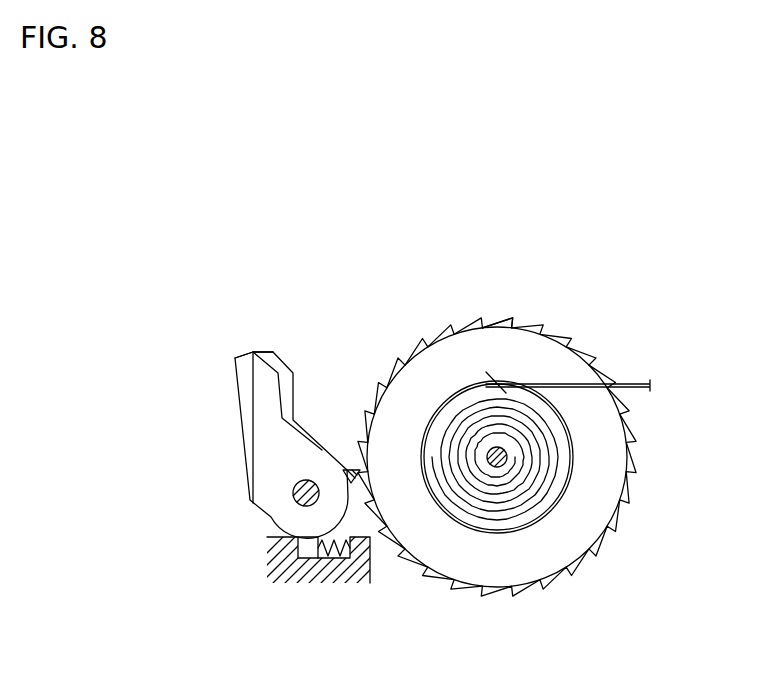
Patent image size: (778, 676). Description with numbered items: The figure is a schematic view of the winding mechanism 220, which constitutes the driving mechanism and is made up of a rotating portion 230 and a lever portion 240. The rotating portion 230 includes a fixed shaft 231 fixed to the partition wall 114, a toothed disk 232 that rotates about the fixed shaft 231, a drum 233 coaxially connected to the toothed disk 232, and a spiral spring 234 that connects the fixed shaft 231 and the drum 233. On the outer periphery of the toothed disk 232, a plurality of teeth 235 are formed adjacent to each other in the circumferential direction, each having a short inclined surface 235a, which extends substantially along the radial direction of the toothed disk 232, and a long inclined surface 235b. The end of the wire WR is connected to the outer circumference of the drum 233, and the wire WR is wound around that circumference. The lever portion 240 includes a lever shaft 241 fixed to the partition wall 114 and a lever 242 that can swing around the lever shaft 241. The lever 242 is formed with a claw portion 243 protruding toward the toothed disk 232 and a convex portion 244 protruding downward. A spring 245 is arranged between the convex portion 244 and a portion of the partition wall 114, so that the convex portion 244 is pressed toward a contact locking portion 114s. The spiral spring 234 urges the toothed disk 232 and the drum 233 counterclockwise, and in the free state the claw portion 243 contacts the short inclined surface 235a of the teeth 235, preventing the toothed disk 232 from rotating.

The winding mechanism 220 is at (413, 282).
The rotating portion 230 is at (603, 368).
The fixed shaft 231 is at (506, 460).
The toothed disk 232 is at (625, 447).
The drum 233 is at (532, 525).
The spiral spring 234 is at (617, 386).
The teeth 235 is at (578, 245).
The short inclined surface 235a is at (482, 322).
The long inclined surface 235b is at (497, 323).
The wire WR is at (530, 442).
The lever portion 240 is at (297, 418).
The lever shaft 241 is at (294, 493).
The lever 242 is at (255, 350).
The claw portion 243 is at (350, 470).
The convex portion 244 is at (306, 558).
The spring 245 is at (340, 558).
The partition wall 114 is at (448, 646).
The contact locking portion 114s is at (290, 549).